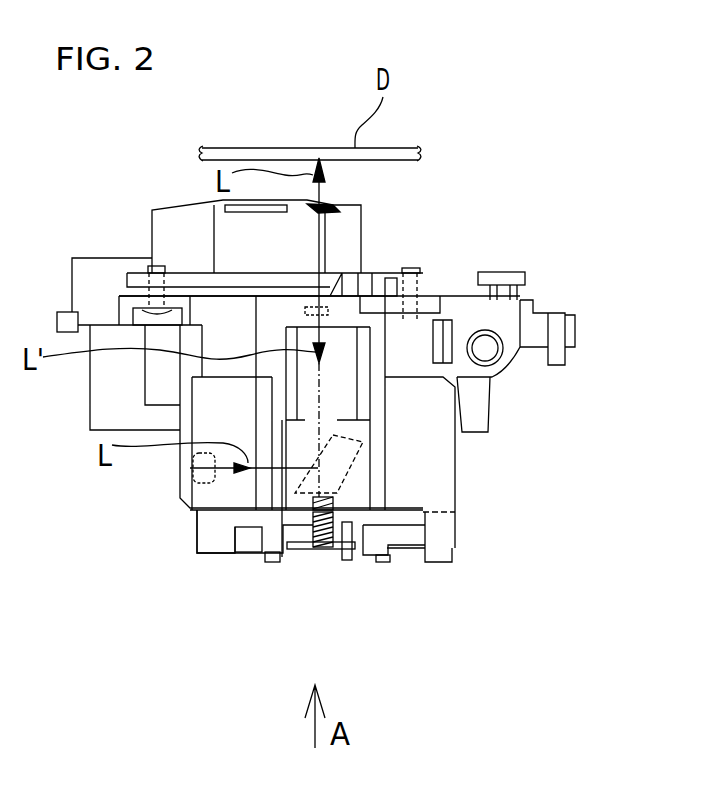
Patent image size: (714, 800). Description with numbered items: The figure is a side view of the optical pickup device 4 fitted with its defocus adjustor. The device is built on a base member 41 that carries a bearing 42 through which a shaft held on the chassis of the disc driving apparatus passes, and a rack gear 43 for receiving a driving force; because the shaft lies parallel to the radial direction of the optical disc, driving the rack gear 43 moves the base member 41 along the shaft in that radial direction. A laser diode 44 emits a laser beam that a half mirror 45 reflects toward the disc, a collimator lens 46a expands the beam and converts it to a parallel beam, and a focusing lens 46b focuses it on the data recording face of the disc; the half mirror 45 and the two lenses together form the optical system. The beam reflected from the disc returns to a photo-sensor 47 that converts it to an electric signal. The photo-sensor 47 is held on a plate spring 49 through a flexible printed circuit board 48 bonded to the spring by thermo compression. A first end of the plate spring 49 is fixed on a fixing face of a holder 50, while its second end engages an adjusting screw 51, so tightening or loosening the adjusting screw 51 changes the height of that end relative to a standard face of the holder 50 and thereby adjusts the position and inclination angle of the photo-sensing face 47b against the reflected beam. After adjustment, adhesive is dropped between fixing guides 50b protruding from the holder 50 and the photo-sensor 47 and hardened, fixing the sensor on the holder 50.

The optical pickup device 4 is at (585, 150).
The base member 41 is at (442, 473).
The bearing 42 is at (500, 362).
The rack gear 43 is at (572, 335).
The laser diode 44 is at (195, 487).
The half mirror 45 is at (370, 545).
The collimator lens 46a is at (325, 270).
The focusing lens 46b is at (335, 207).
The photo-sensor 47 is at (312, 548).
The photo-sensing face 47b is at (320, 550).
The flexible printed circuit board 48 is at (245, 550).
The plate spring 49 is at (403, 552).
The holder 50 is at (207, 555).
The fixing guides 50b is at (267, 562).
The adjusting screw 51 is at (345, 560).